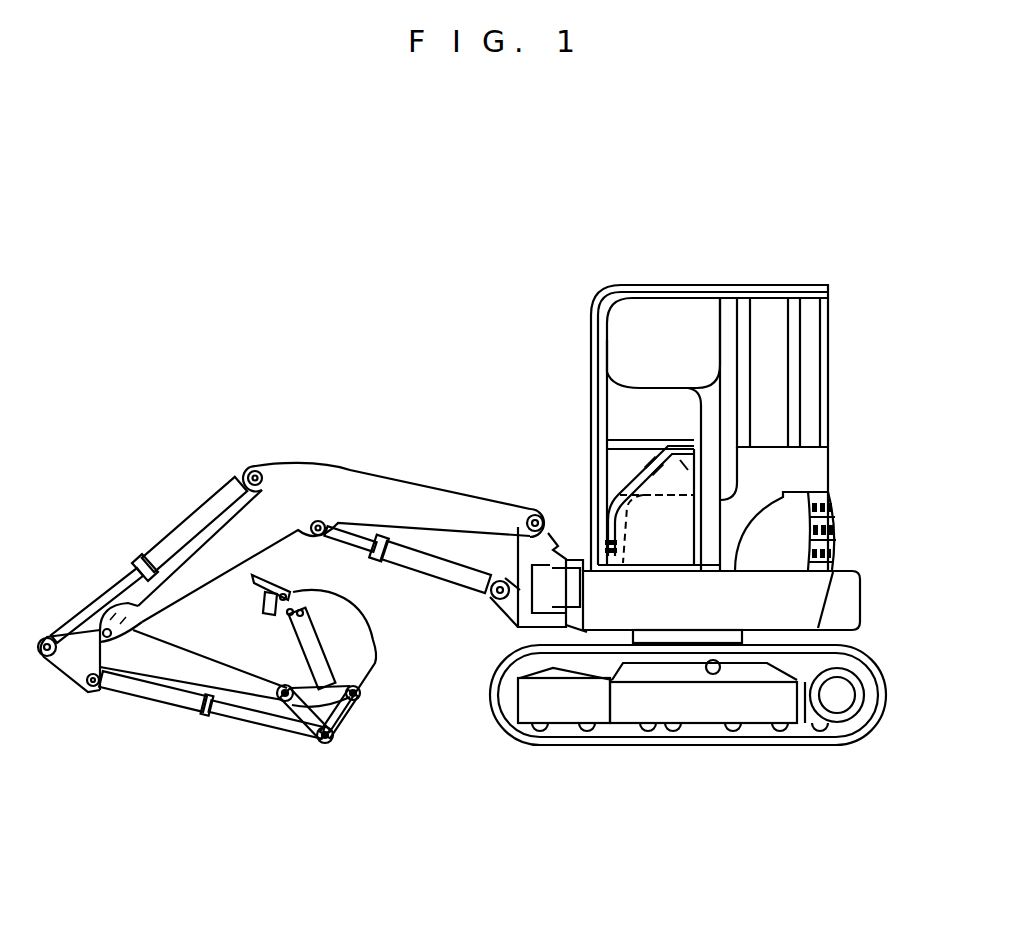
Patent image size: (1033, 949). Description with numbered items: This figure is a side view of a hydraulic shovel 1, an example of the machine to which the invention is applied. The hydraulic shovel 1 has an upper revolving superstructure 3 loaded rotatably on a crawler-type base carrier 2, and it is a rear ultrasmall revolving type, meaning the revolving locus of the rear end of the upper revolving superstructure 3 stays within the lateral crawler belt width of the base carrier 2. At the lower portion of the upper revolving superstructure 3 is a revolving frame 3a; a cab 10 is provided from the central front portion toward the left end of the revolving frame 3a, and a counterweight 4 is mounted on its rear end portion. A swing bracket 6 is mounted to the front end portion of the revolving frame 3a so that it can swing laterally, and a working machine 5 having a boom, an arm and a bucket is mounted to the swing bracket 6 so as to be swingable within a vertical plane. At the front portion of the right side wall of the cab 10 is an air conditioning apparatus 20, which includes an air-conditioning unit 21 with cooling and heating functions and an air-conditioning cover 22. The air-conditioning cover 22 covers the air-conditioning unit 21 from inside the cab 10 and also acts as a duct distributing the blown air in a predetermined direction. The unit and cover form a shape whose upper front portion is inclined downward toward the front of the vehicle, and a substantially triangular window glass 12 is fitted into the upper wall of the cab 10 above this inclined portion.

The hydraulic shovel 1 is at (392, 290).
The base carrier 2 is at (684, 697).
The upper revolving superstructure 3 is at (836, 464).
The revolving frame 3a is at (807, 597).
The counterweight 4 is at (846, 608).
The working machine 5 is at (402, 497).
The swing bracket 6 is at (560, 540).
The cab 10 is at (828, 328).
The window glass 12 is at (613, 462).
The air conditioning apparatus 20 is at (561, 196).
The air-conditioning unit 21 is at (667, 492).
The air-conditioning cover 22 is at (688, 470).